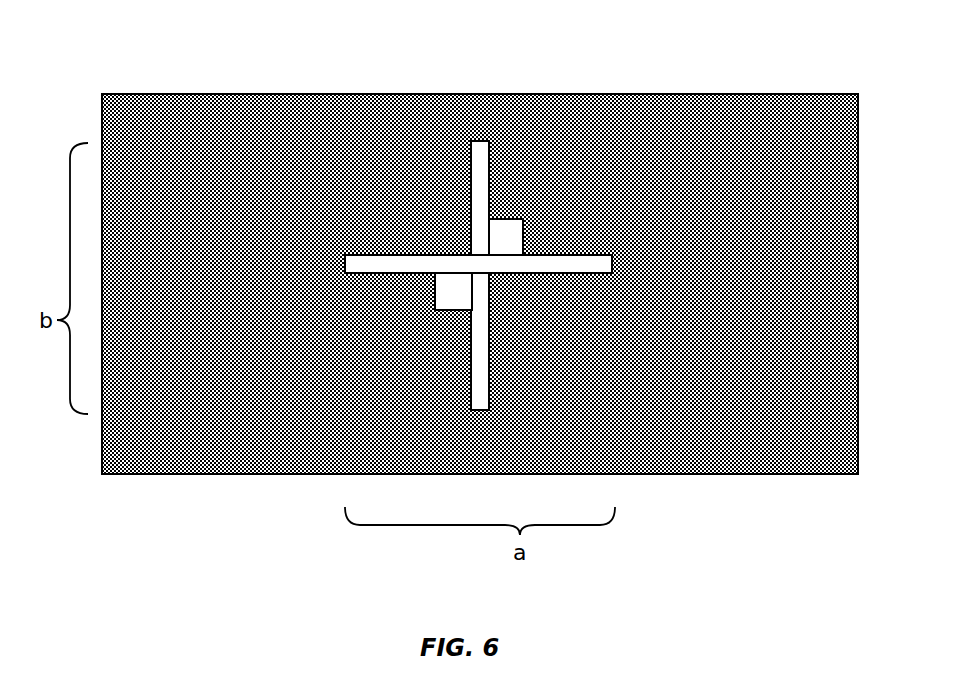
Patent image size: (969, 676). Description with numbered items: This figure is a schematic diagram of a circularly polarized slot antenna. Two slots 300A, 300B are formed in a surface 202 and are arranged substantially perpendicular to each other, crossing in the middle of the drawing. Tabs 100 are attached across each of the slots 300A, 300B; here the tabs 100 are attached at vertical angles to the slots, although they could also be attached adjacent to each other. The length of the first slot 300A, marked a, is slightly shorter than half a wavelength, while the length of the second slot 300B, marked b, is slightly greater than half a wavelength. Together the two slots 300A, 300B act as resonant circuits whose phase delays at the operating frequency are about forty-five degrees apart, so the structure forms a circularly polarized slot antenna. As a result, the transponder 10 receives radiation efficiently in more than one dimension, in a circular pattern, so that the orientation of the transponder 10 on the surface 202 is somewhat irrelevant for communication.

The surface 202 is at (155, 105).
The transponder 10 is at (593, 276).
The first slot 300A is at (353, 255).
The second slot 300B is at (470, 153).
The tab 100 is at (493, 230).